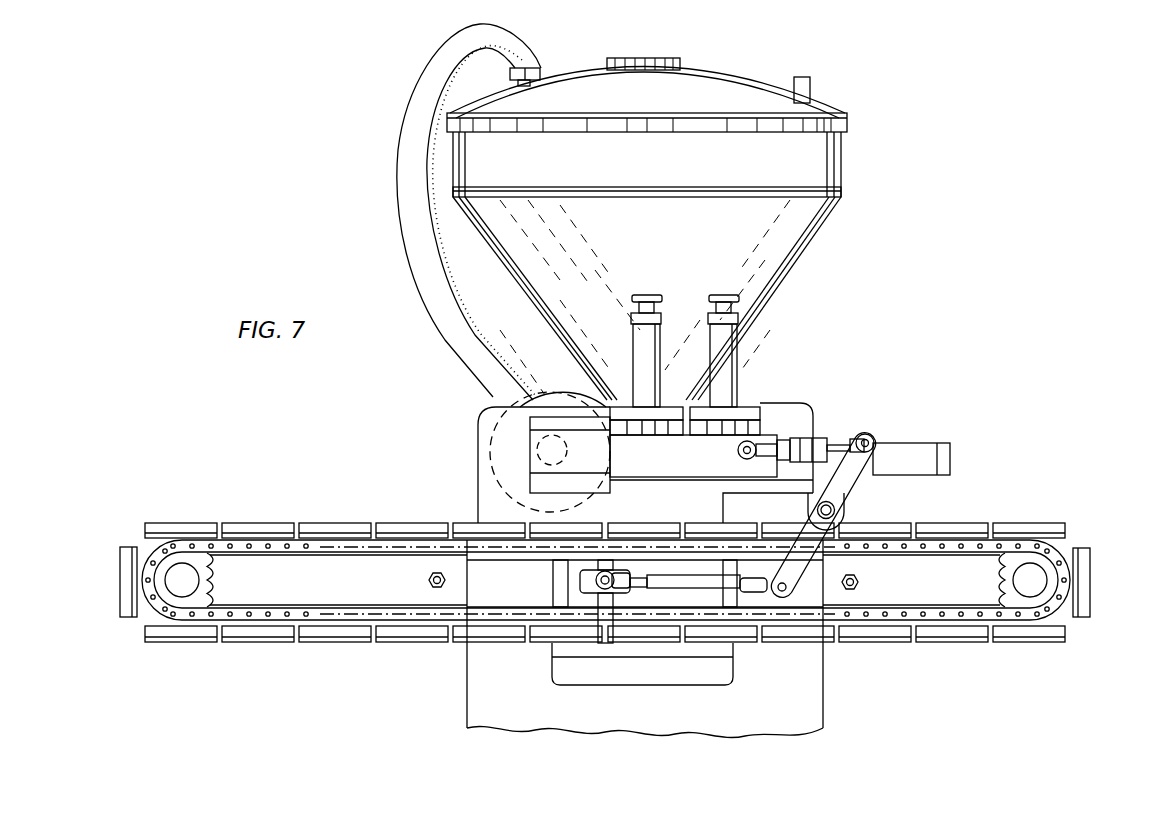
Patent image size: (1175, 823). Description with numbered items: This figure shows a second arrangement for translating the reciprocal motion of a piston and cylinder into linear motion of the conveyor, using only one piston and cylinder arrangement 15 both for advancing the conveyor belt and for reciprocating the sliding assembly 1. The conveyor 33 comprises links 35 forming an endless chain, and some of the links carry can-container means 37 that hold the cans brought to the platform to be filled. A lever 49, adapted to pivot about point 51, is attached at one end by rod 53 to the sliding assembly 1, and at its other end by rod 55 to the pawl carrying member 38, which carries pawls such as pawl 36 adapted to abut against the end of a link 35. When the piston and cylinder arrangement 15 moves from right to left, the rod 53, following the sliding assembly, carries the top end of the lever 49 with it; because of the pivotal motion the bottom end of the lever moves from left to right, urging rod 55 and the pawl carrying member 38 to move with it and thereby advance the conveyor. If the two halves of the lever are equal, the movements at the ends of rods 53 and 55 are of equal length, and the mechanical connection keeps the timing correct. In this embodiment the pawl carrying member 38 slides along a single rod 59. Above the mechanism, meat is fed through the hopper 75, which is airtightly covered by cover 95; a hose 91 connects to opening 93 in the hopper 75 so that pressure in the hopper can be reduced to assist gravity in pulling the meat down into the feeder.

The sliding assembly 1 is at (650, 442).
The piston and cylinder arrangement 15 is at (942, 454).
The conveyor 33 is at (1072, 548).
The links 35 is at (574, 575).
The pawl 36 is at (611, 660).
The can-container means 37 is at (612, 582).
The pawl carrying member 38 is at (550, 619).
The lever 49 is at (845, 435).
The pivot point 51 is at (861, 507).
The rod 53 is at (823, 490).
The rod 55 is at (689, 541).
The rod 59 is at (558, 583).
The hopper 75 is at (683, 256).
The hose 91 is at (439, 212).
The opening 93 is at (552, 57).
The cover 95 is at (647, 76).